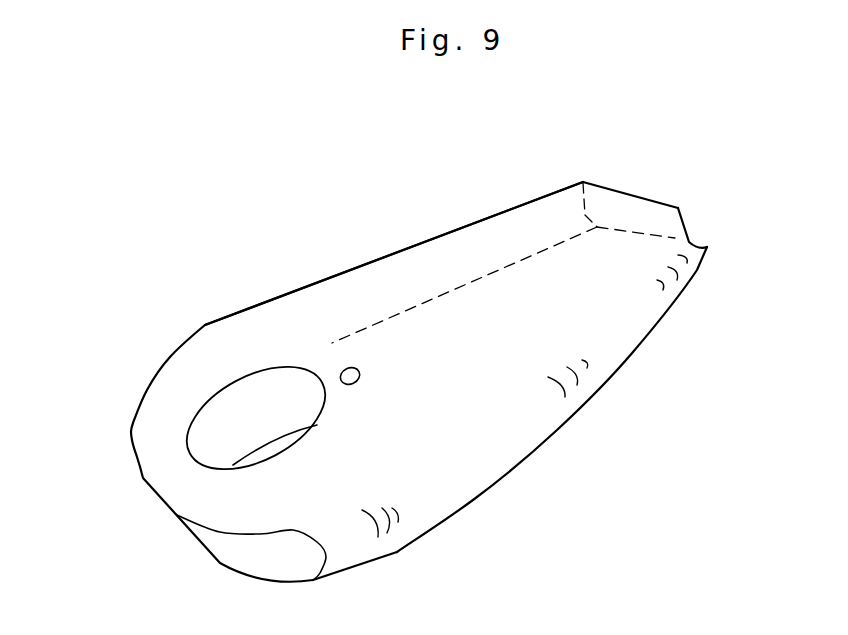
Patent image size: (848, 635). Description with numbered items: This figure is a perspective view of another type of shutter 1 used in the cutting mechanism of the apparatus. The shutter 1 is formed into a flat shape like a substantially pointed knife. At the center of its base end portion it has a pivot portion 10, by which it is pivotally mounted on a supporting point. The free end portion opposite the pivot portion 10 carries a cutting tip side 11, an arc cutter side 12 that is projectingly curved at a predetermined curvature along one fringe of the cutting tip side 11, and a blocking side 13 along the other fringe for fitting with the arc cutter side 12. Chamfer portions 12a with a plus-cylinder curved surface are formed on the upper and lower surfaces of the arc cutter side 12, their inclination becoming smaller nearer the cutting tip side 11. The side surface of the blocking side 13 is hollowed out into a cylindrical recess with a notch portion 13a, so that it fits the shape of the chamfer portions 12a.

The shutter 1 is at (481, 285).
The pivot portion 10 is at (210, 423).
The cutting tip side 11 is at (686, 221).
The arc cutter side 12 is at (620, 347).
The chamfer portion 12a is at (473, 503).
The blocking side 13 is at (395, 253).
The notch portion 13a is at (600, 225).